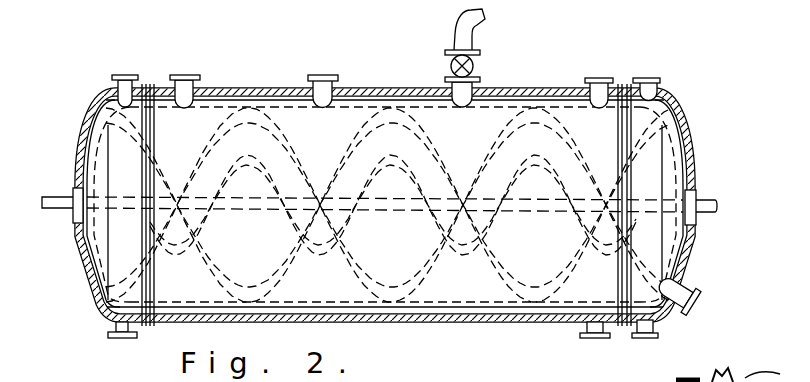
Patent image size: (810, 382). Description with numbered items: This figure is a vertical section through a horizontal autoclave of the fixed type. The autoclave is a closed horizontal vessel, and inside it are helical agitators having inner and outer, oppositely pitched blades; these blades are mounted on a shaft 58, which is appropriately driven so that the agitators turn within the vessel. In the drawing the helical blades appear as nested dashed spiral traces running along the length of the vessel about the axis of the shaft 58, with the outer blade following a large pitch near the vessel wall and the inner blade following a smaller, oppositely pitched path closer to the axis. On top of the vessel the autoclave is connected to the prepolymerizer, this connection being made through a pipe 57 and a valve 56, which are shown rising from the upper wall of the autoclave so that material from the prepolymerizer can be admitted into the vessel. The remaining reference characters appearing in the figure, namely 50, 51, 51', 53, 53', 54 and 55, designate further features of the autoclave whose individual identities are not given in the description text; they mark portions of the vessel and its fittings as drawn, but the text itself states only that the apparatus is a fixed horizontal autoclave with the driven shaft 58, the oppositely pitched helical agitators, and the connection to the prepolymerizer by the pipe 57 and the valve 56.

The helical coil 50 is at (325, 290).
The tank shell 51 is at (385, 233).
The tank liner 51' is at (385, 178).
The left head lining 53 is at (81, 203).
The right head lining 53' is at (704, 203).
The left end head 54 is at (102, 135).
The right end head 55 is at (668, 148).
The valve 56 is at (449, 61).
The pipe 57 is at (474, 32).
The shaft 58 is at (700, 193).